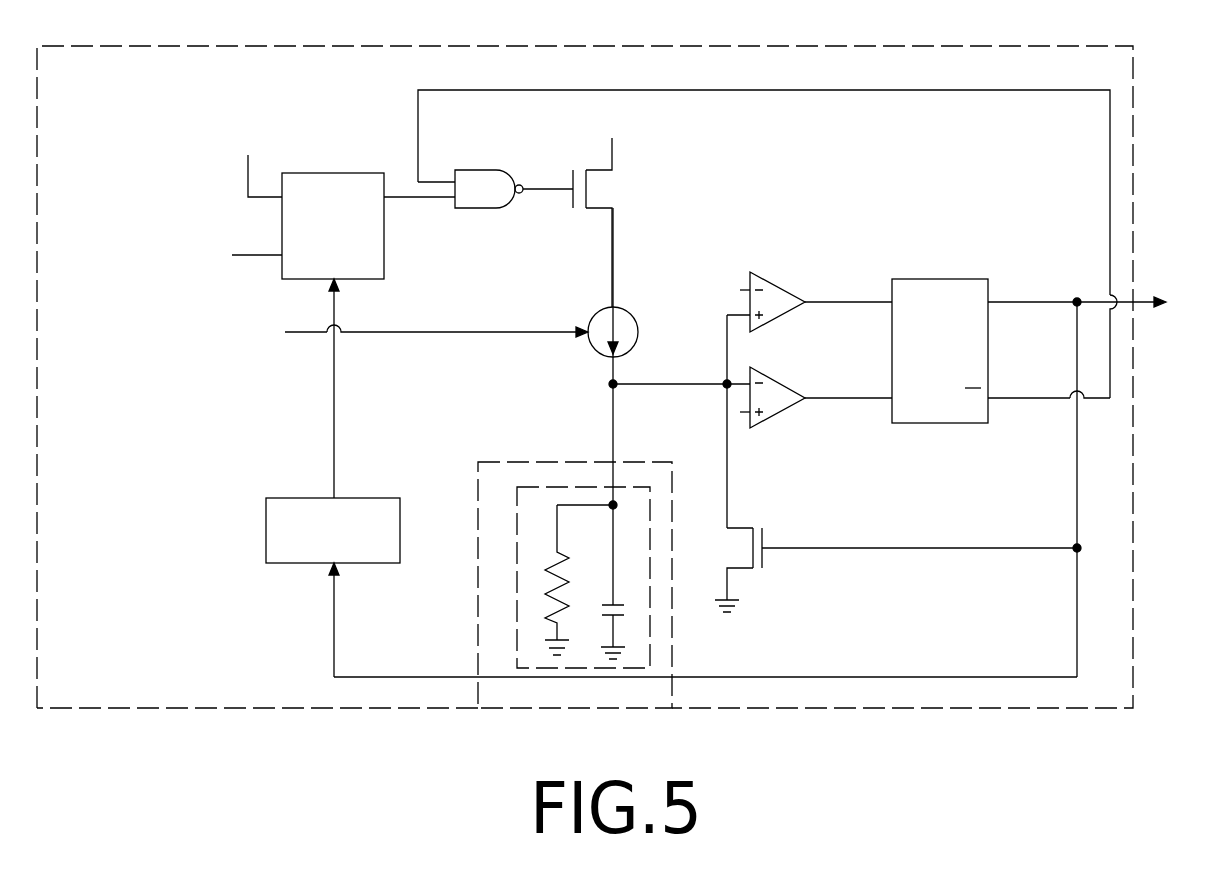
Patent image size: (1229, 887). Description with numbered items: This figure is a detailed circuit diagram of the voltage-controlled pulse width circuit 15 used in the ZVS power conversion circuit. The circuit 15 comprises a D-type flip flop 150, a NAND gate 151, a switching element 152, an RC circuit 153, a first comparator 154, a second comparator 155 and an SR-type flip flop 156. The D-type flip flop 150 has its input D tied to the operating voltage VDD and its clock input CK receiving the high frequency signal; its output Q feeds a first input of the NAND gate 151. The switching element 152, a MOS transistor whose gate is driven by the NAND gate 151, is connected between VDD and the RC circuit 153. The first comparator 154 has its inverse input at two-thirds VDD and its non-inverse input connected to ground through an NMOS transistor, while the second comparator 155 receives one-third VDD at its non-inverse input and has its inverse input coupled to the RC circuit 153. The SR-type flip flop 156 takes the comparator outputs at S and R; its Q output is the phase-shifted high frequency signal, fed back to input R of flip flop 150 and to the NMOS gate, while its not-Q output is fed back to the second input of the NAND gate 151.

The voltage-controlled pulse width circuit 15 is at (737, 58).
The D-type flip flop 150 is at (375, 255).
The NAND gate 151 is at (472, 173).
The switching element 152 is at (618, 163).
The RC circuit 153 is at (547, 663).
The first comparator 154 is at (777, 292).
The second comparator 155 is at (777, 388).
The SR-type flip flop 156 is at (937, 282).